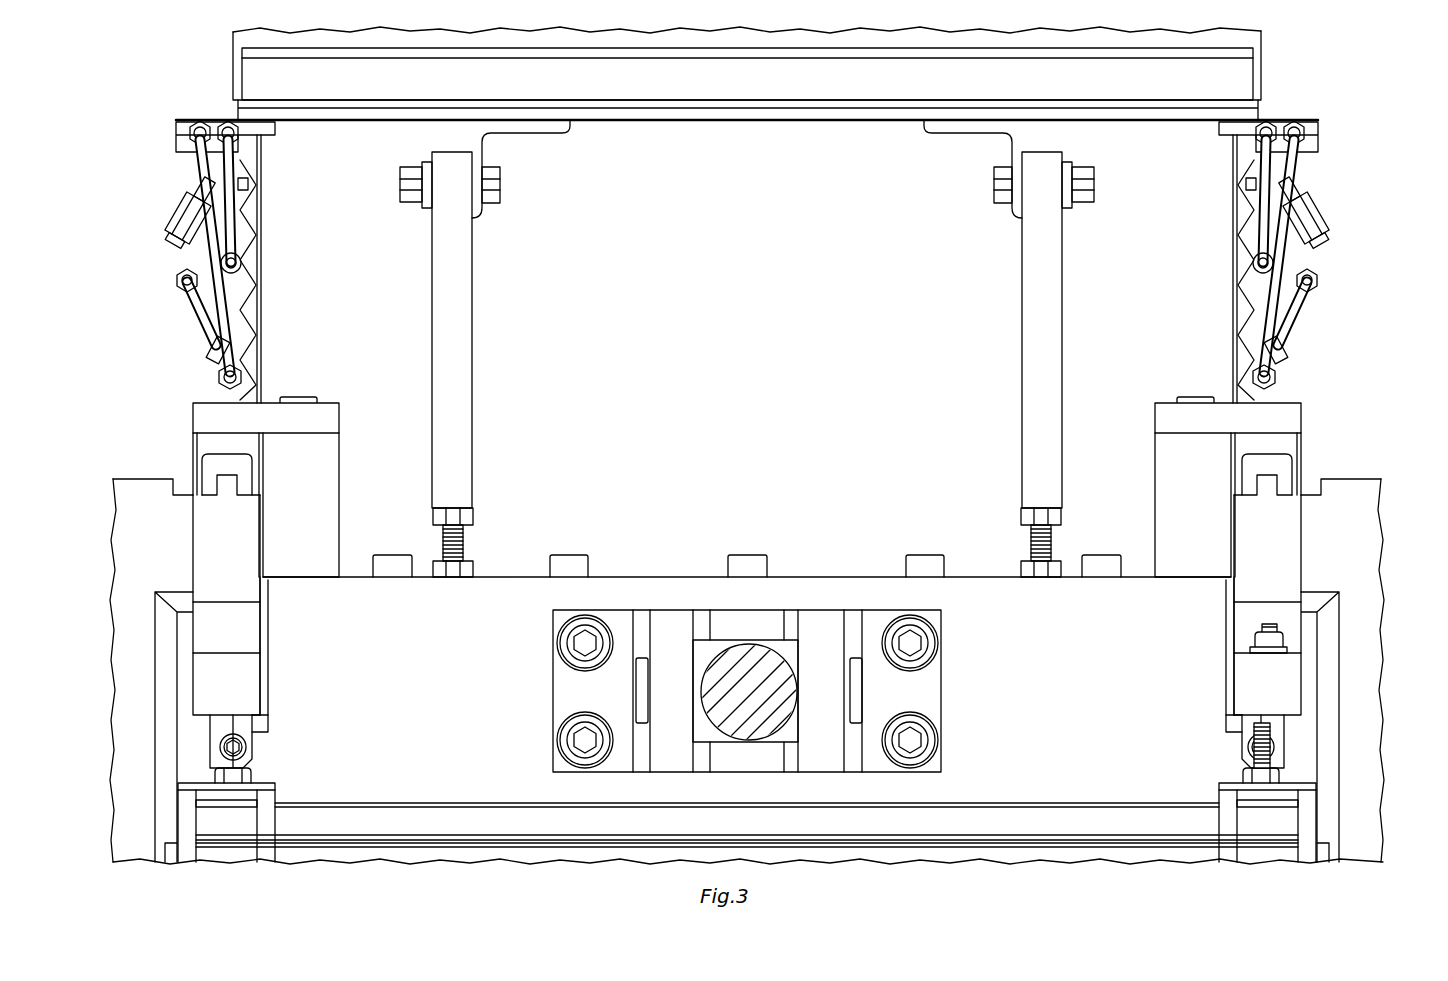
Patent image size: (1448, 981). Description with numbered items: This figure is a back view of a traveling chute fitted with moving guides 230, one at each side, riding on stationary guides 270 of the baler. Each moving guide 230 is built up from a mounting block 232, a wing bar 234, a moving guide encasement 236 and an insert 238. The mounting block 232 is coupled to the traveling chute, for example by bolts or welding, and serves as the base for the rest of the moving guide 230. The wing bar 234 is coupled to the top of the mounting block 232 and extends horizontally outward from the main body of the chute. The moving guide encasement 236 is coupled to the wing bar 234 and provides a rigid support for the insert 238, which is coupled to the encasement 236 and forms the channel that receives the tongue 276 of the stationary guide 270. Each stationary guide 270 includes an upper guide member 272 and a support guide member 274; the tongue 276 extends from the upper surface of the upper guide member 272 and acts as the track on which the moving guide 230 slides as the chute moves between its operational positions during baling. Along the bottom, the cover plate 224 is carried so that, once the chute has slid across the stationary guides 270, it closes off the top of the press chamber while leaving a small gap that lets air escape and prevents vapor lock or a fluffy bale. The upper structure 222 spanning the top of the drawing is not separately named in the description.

The upper structure / beam 222 is at (258, 75).
The cover plate 224 is at (1048, 818).
The moving guide 230 is at (313, 372).
The mounting block 232 is at (317, 509).
The wing bar 234 is at (207, 408).
The moving guide encasement 236 is at (206, 444).
The insert 238 is at (213, 467).
The stationary guide 270 is at (272, 594).
The upper guide member 272 is at (207, 532).
The support guide member 274 is at (247, 630).
The tongue 276 is at (231, 486).